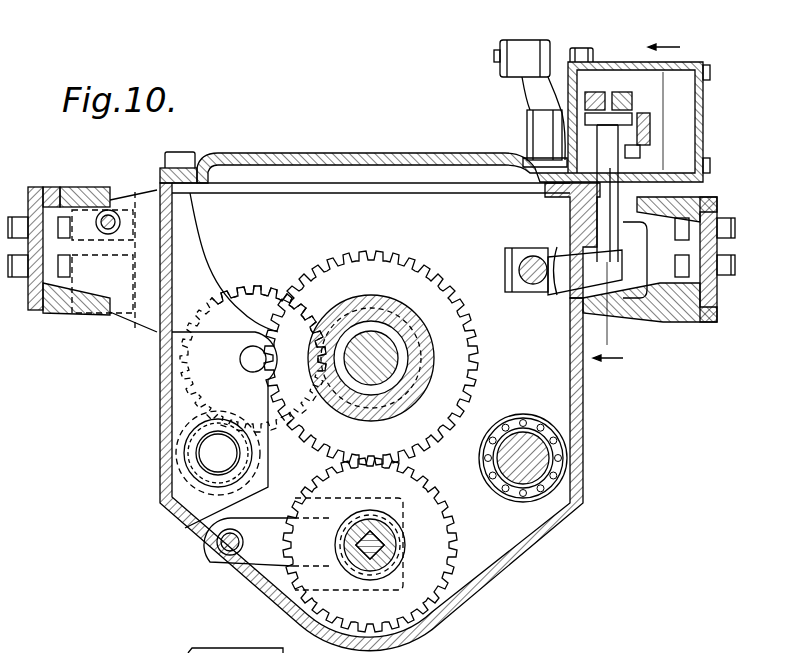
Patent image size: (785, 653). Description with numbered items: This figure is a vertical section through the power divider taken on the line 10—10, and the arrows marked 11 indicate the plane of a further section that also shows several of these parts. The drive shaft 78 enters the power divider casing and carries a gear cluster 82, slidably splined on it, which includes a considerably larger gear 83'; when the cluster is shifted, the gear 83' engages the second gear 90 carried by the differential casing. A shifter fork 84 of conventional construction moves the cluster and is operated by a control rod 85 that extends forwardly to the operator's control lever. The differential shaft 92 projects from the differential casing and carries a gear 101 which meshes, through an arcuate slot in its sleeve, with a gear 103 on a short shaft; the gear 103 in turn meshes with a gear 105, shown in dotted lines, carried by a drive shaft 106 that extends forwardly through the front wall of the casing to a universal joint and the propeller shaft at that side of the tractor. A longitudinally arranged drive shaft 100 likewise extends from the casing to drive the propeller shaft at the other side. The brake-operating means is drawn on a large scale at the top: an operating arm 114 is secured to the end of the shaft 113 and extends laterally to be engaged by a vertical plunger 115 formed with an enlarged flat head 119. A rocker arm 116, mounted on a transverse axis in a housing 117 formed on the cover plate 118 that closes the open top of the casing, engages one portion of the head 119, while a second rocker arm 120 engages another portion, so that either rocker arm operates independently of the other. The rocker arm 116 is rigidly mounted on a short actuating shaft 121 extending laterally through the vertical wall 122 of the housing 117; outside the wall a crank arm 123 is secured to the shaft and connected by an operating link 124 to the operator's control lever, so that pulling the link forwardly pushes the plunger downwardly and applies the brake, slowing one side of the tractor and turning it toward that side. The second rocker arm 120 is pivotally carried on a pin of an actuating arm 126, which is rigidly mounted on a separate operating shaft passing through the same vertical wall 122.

The section line 10 is at (55, 187).
The section line 11 is at (654, 203).
The drive shaft 78 is at (385, 540).
The gear cluster 82 is at (395, 553).
The larger gear 83' is at (392, 545).
The shifter fork 84 is at (257, 530).
The control rod 85 is at (112, 210).
The second gear 90 is at (478, 354).
The differential shaft 92 is at (378, 340).
The drive shaft 100 is at (535, 455).
The gear 101 is at (242, 358).
The gear 103 is at (254, 290).
The gear 105 is at (183, 462).
The drive shaft 106 is at (212, 452).
The shaft 113 is at (545, 252).
The operating arm 114 is at (570, 280).
The vertical plunger 115 is at (575, 213).
The rocker arm 116 is at (570, 62).
The housing 117 is at (612, 62).
The cover plate 118 is at (347, 153).
The enlarged flat head 119 is at (565, 152).
The second rocker arm 120 is at (622, 92).
The actuating shaft 121 is at (527, 130).
The vertical wall 122 is at (548, 90).
The crank arm 123 is at (520, 48).
The operating link 124 is at (494, 56).
The actuating arm 126 is at (650, 127).